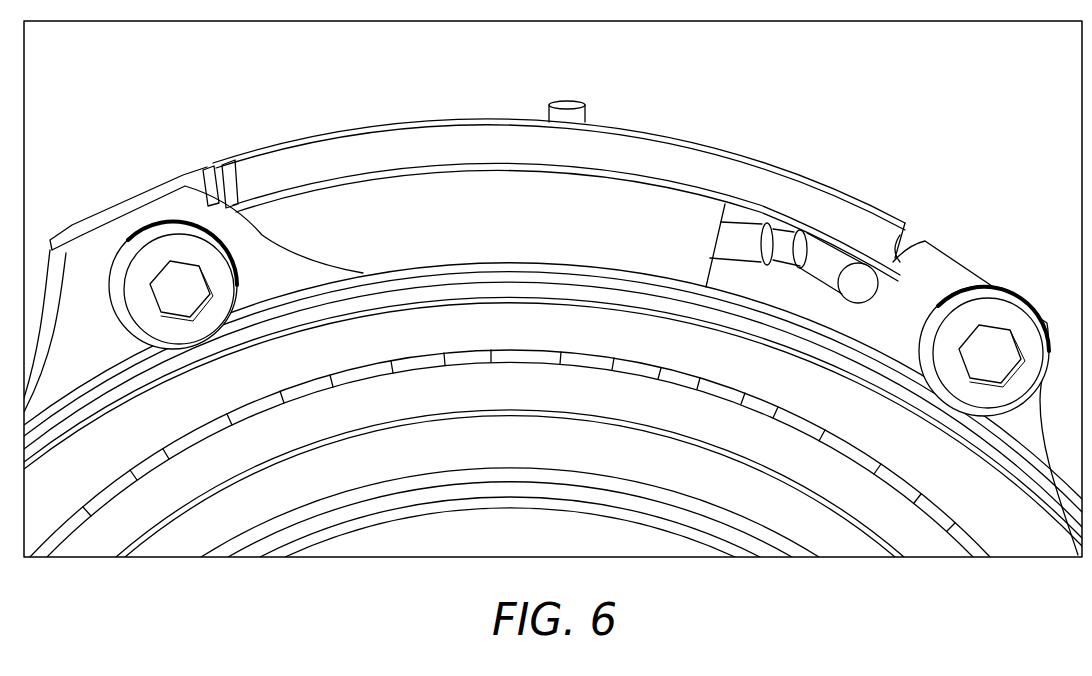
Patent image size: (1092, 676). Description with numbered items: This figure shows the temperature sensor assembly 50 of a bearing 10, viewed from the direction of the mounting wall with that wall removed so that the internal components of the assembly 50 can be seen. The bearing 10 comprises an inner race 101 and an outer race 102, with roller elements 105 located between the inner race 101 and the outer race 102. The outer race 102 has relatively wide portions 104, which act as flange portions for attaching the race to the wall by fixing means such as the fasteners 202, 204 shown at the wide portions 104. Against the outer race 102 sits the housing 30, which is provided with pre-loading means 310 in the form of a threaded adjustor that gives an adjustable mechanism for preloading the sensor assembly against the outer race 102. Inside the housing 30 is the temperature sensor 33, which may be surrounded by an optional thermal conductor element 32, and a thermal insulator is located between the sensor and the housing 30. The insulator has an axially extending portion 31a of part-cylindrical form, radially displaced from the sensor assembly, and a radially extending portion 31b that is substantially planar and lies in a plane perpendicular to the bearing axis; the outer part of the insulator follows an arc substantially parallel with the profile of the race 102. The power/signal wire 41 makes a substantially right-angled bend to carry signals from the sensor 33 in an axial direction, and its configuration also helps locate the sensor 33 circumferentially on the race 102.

The bearing 10 is at (510, 483).
The housing 30 is at (437, 140).
The axially extending portion 31a is at (323, 180).
The radially extending portion 31b is at (263, 217).
The thermal conductor element 32 is at (520, 226).
The temperature sensor 33 is at (750, 234).
The power/signal wire 41 is at (912, 232).
The temperature sensor assembly 50 is at (850, 180).
The inner race 101 is at (546, 457).
The outer race 102 is at (489, 334).
The relatively wide portions 104 is at (115, 341).
The roller elements 105 is at (203, 432).
The fastener 202 is at (958, 385).
The fastener 204 is at (203, 327).
The pre-loading means 310 is at (568, 100).